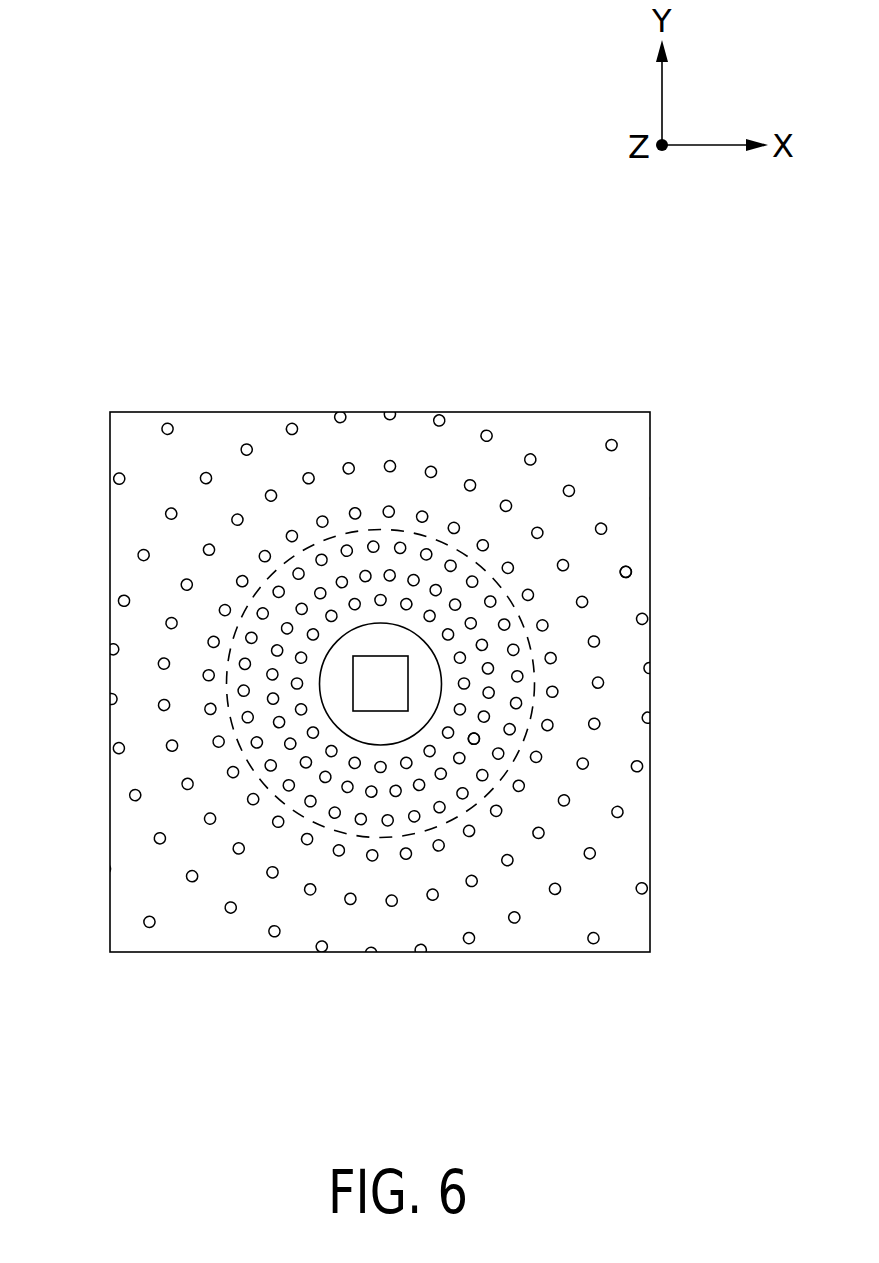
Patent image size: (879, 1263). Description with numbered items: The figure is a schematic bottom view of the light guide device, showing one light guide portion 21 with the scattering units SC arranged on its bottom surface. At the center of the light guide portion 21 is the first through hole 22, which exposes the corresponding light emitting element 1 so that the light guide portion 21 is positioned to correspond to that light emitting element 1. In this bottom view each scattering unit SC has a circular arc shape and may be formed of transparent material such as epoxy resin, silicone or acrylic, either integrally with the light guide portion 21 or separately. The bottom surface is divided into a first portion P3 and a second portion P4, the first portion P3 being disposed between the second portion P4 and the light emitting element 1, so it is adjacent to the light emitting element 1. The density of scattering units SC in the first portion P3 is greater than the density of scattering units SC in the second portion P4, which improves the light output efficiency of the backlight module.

The light guide portion 21 is at (134, 362).
The light emitting element 1 is at (408, 678).
The first through hole 22 is at (437, 710).
The scattering unit SC is at (632, 573).
The first portion P3 is at (226, 694).
The second portion P4 is at (152, 770).